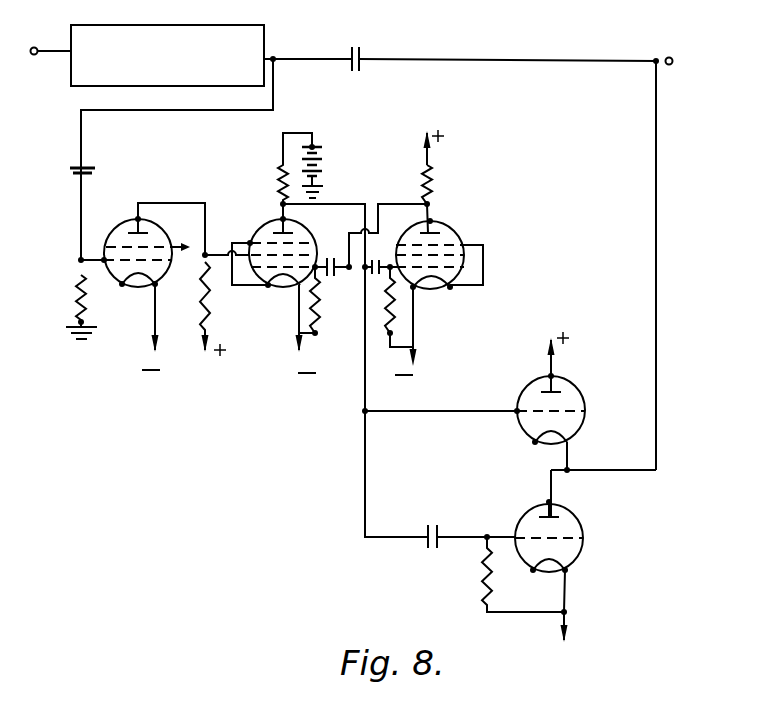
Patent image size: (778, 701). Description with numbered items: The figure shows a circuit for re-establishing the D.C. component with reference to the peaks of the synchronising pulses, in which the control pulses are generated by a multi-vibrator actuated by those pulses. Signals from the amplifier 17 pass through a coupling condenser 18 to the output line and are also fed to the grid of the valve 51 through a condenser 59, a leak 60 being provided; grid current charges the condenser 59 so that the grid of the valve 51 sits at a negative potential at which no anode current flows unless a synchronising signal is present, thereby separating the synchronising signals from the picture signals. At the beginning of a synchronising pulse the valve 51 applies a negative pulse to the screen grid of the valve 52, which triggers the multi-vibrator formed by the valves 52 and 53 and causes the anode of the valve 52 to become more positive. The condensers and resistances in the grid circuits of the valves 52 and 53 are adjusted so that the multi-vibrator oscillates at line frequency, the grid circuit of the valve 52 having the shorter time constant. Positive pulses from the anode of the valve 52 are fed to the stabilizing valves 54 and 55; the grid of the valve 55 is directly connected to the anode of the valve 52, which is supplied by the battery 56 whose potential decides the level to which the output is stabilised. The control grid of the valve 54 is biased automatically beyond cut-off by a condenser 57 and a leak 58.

The amplifier 17 is at (186, 26).
The coupling capacitor 18 is at (352, 52).
The valve 51 is at (124, 227).
The valve 52 is at (258, 234).
The valve 53 is at (470, 227).
The stabilizing valve 54 is at (583, 540).
The stabilizing valve 55 is at (590, 386).
The battery 56 is at (322, 171).
The condenser 57 is at (437, 531).
The leak 58 is at (483, 578).
The condenser 59 is at (72, 166).
The leak 60 is at (78, 296).